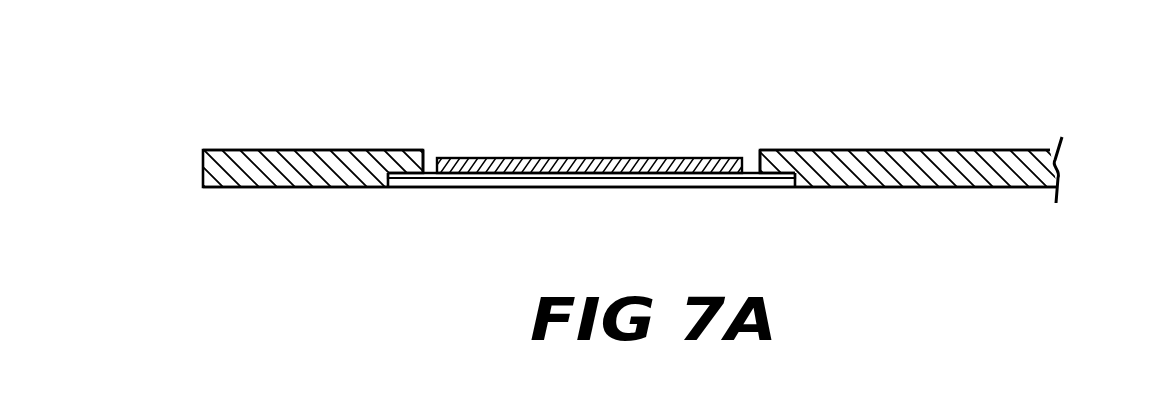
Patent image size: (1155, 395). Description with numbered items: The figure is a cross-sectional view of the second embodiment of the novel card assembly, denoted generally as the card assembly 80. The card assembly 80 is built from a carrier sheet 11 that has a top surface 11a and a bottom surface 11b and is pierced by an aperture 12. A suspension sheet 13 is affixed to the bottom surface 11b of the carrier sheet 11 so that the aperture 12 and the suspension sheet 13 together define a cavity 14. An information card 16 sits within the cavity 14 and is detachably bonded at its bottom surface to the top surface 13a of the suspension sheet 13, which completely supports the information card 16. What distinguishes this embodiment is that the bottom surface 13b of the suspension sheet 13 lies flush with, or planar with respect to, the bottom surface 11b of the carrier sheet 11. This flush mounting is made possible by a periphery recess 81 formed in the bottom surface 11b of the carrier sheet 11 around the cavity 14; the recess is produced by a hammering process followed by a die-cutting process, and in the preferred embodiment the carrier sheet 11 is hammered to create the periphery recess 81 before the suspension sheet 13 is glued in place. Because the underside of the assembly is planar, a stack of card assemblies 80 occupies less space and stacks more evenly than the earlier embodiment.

The carrier sheet 11 is at (308, 150).
The top surface of the carrier sheet 11a is at (220, 150).
The bottom surface of the carrier sheet 11b is at (210, 188).
The aperture 12 is at (428, 150).
The suspension sheet 13 is at (640, 188).
The top surface of the suspension sheet 13a is at (742, 186).
The bottom surface of the suspension sheet 13b is at (510, 188).
The cavity 14 is at (640, 117).
The information card 16 is at (575, 158).
The card assembly 80 is at (1035, 96).
The periphery recess 81 is at (407, 188).